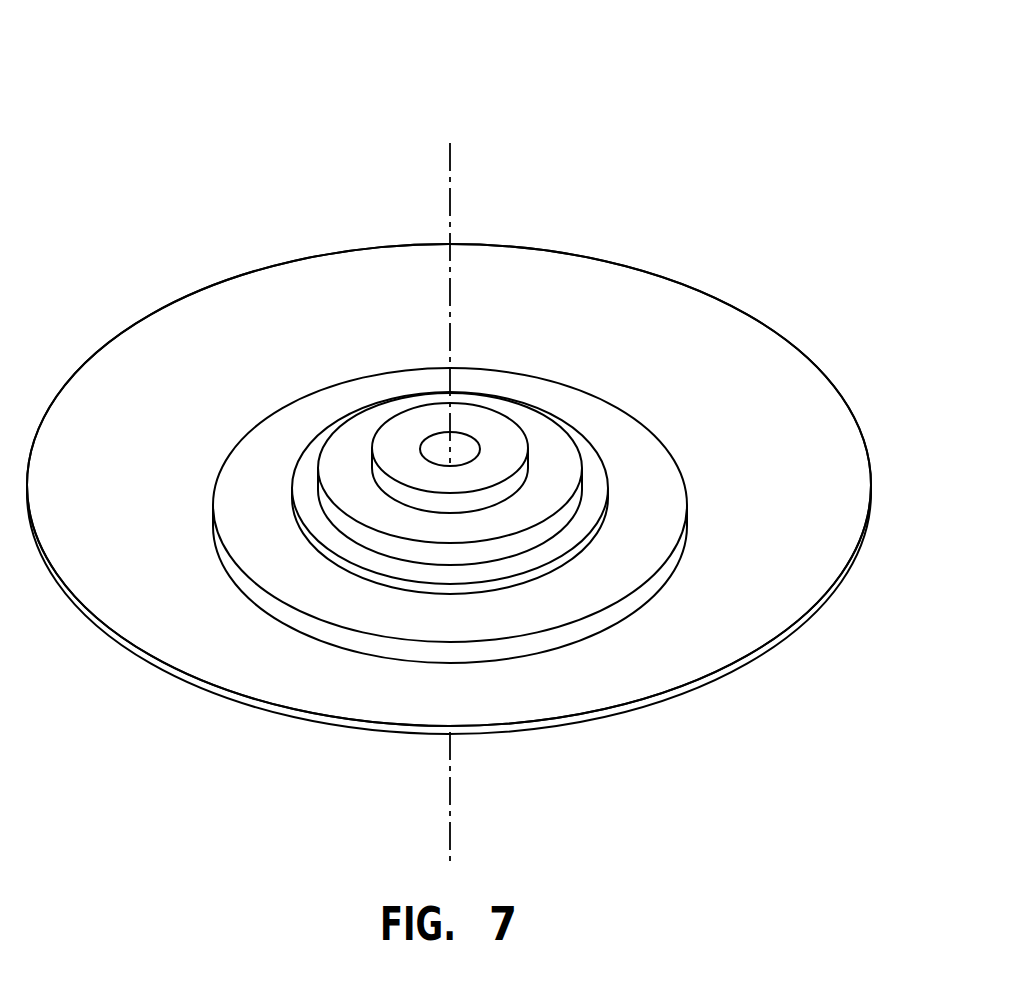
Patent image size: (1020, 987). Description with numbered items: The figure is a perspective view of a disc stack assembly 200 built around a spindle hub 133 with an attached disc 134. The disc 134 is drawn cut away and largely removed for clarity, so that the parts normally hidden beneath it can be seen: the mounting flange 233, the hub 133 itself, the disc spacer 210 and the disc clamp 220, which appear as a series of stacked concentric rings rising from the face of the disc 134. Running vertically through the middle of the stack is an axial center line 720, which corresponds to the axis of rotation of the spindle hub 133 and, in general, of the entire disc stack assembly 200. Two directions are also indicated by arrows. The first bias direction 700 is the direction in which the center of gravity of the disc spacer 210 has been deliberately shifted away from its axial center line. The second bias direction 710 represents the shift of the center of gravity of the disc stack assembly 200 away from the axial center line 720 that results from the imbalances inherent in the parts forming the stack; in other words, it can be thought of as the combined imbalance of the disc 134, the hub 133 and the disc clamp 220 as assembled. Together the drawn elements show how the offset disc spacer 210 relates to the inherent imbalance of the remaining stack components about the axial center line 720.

The disc stack assembly 200 is at (657, 96).
The spindle hub 133 is at (557, 640).
The disc 134 is at (673, 278).
The disc spacer 210 is at (595, 492).
The disc clamp 220 is at (401, 426).
The mounting flange 233 is at (540, 427).
The first bias direction 700 is at (800, 651).
The second bias direction 710 is at (173, 291).
The axial center line 720 is at (452, 206).